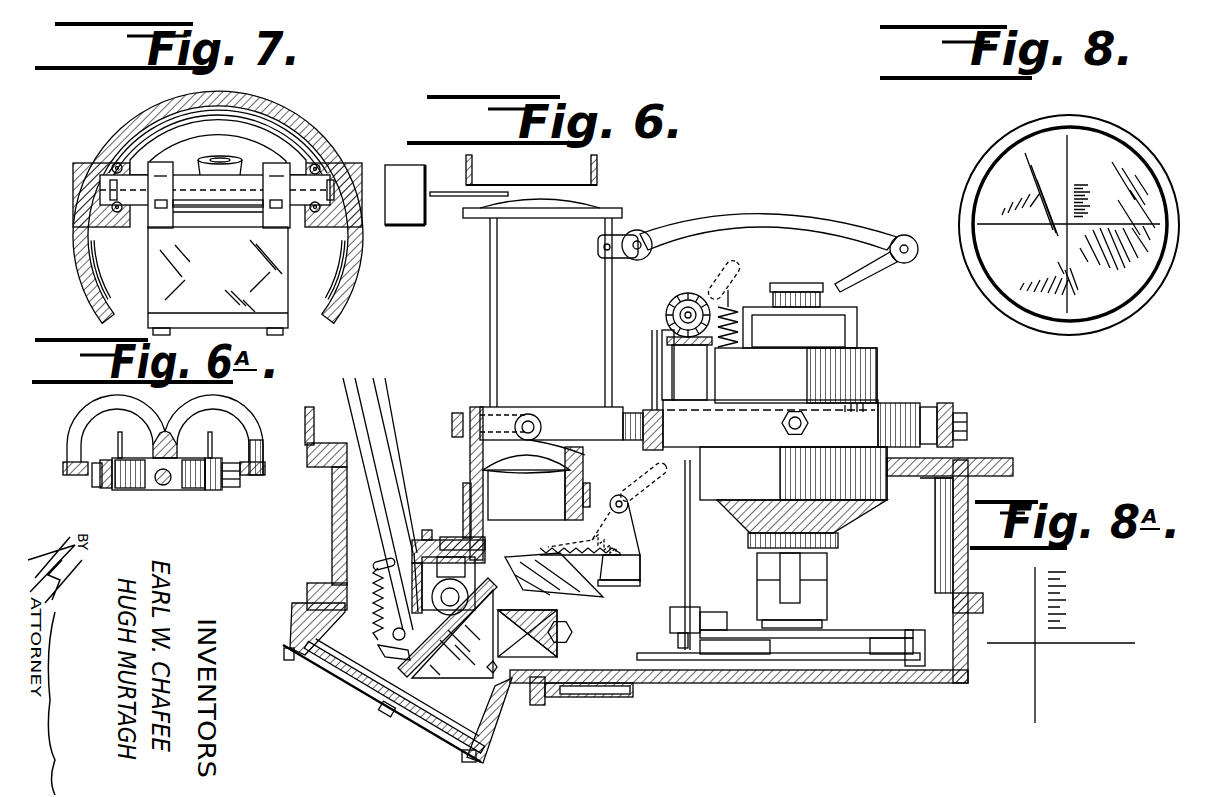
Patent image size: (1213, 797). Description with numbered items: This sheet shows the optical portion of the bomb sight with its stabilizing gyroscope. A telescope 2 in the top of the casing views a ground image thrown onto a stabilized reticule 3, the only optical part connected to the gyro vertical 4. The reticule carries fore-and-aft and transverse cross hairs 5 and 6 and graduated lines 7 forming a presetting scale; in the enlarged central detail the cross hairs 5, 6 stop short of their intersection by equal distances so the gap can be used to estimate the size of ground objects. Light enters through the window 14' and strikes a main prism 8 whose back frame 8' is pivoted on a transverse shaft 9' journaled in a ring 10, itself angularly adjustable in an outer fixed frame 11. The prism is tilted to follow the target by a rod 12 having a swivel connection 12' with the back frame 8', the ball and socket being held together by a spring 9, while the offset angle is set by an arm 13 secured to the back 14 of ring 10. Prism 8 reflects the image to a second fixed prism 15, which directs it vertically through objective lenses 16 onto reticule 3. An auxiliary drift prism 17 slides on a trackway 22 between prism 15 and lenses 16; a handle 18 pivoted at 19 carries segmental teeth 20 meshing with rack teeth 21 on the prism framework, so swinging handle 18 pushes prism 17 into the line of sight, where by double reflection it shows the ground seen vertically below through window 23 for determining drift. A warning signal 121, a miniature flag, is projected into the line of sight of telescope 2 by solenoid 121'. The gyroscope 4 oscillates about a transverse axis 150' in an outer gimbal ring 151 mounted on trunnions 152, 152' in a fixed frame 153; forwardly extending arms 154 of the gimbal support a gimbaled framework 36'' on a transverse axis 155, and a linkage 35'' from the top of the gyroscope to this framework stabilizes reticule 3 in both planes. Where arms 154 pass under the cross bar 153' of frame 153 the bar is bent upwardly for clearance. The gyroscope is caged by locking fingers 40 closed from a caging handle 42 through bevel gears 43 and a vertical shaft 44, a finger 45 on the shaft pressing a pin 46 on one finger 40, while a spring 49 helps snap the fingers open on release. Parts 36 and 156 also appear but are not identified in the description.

In FIG. 6, the telescope 2 is at (594, 163).
In FIG. 6, the stabilized reticule 3 is at (522, 209).
In FIG. 8, the stabilized reticule 3 is at (1074, 224).
In FIG. 6, the gyro vertical 4 is at (862, 362).
In FIG. 8, the fore and aft cross hair 5 is at (1068, 153).
In FIG. 8A, the fore and aft cross hair 5 is at (1033, 606).
In FIG. 8, the transverse cross hair 6 is at (1027, 228).
In FIG. 8A, the transverse cross hair 6 is at (1072, 645).
In FIG. 8, the graduated lines 7 is at (1083, 212).
In FIG. 8A, the graduated lines 7 is at (1062, 612).
In FIG. 7, the prism 8 is at (218, 281).
In FIG. 6, the prism 8 is at (454, 649).
In FIG. 7, the back frame of the prism 8' is at (246, 231).
In FIG. 6, the back frame of the prism 8' is at (450, 616).
In FIG. 6, the spring 9 is at (372, 598).
In FIG. 7, the pivotal transverse shaft 9' is at (217, 174).
In FIG. 6, the pivotal transverse shaft 9' is at (448, 586).
In FIG. 7, the ring 10 is at (112, 152).
In FIG. 6, the ring 10 is at (413, 553).
In FIG. 6, the outer fixed frame 11 is at (437, 540).
In FIG. 6, the rod 12 is at (636, 545).
In FIG. 6, the swivel connection 12' is at (373, 630).
In FIG. 6, the arm 13 is at (387, 408).
In FIG. 6, the back of ring 14 is at (448, 549).
In FIG. 6, the window 14' is at (397, 701).
In FIG. 6, the second fixed prism 15 is at (533, 632).
In FIG. 6, the objective lenses 16 is at (528, 453).
In FIG. 6, the auxiliary drift prism 17 is at (597, 592).
In FIG. 6, the handle 18 is at (680, 467).
In FIG. 6, the pivot 19 is at (617, 496).
In FIG. 6, the segmental teeth 20 is at (630, 522).
In FIG. 6, the rack teeth 21 is at (570, 545).
In FIG. 6, the trackway 22 is at (640, 568).
In FIG. 6, the window 23 is at (598, 692).
In FIG. 6, the linkage 35'' is at (758, 236).
In FIG. 6A, the shaft 36 is at (156, 496).
In FIG. 6, the gimbaled framework 36'' is at (529, 312).
In FIG. 6, the locking fingers 40 is at (845, 642).
In FIG. 6, the caging handle 42 is at (724, 270).
In FIG. 6, the bevel gears 43 is at (667, 320).
In FIG. 6, the vertical shaft 44 is at (690, 528).
In FIG. 6, the finger 45 is at (682, 620).
In FIG. 6, the pin 46 is at (716, 612).
In FIG. 6, the spring 49 is at (745, 305).
In FIG. 6, the warning signal 121 is at (483, 178).
In FIG. 6, the solenoid 121' is at (410, 195).
In FIG. 6, the transverse axis 150' is at (770, 423).
In FIG. 6, the outer gimbal ring 151 is at (920, 406).
In FIG. 6, the trunnion 152 is at (975, 419).
In FIG. 6A, the trunnion 152' is at (173, 502).
In FIG. 6, the trunnion 152' is at (694, 431).
In FIG. 6A, the fixed frame 153 is at (170, 512).
In FIG. 6, the fixed frame 153 is at (819, 403).
In FIG. 6A, the cross bar 153' is at (185, 433).
In FIG. 6, the cross bar 153' is at (645, 363).
In FIG. 6A, the forwardly extending arms 154 is at (108, 484).
In FIG. 6, the forwardly extending arms 154 is at (551, 431).
In FIG. 6A, the transverse axis 155 is at (108, 460).
In FIG. 6, the transverse axis 155 is at (527, 416).
In FIG. 6A, the pin 156 is at (210, 452).